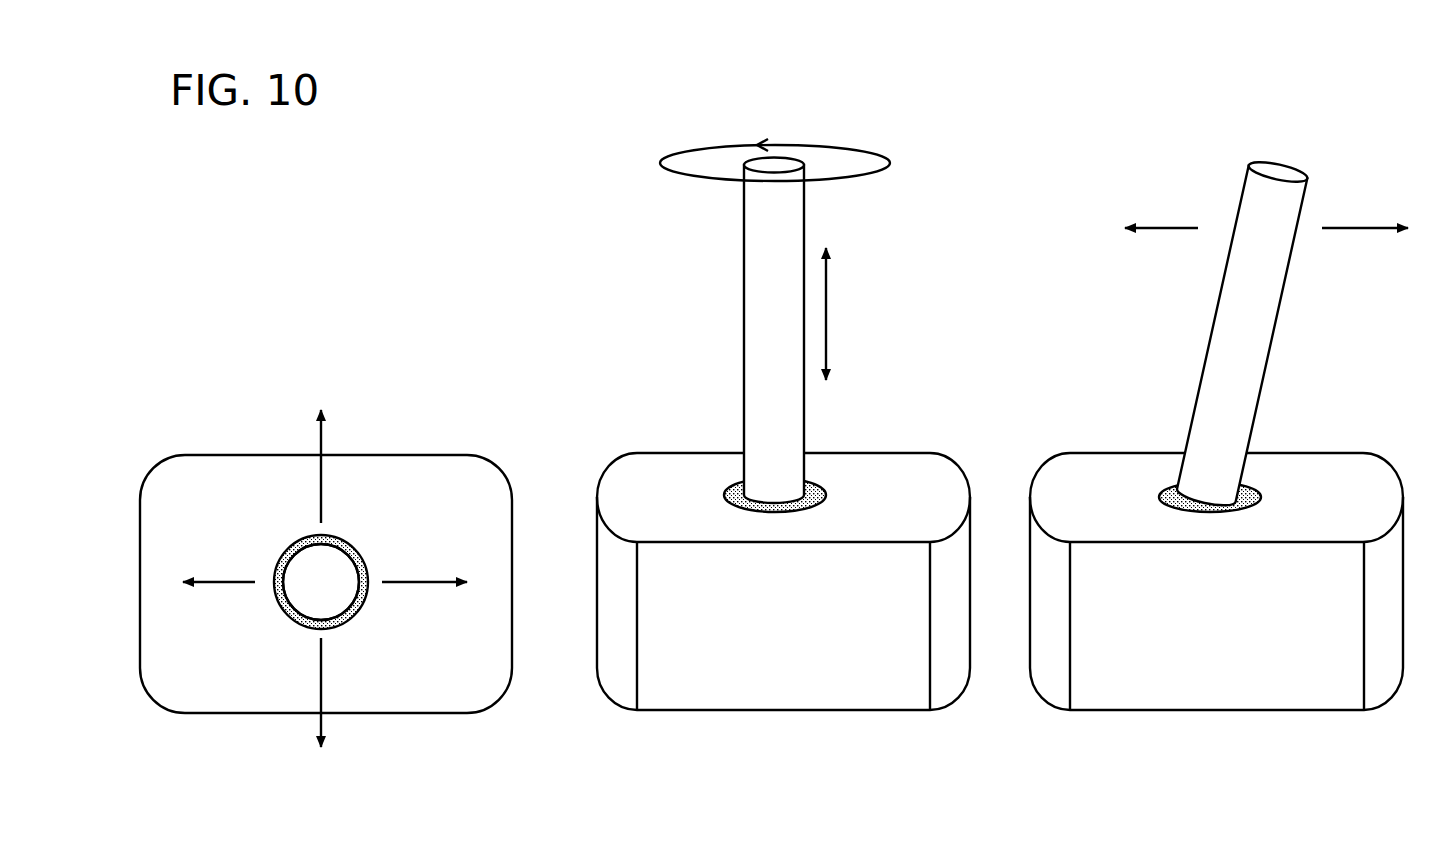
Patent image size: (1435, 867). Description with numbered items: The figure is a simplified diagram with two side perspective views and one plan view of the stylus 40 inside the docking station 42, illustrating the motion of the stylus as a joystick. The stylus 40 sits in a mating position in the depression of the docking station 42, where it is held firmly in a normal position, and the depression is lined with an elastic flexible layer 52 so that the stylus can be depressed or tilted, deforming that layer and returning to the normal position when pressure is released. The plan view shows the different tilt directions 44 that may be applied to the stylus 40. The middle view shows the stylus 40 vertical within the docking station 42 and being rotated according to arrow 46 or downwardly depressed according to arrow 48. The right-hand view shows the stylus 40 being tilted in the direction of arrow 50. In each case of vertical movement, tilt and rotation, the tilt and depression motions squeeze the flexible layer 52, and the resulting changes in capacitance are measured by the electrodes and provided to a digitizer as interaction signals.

The stylus 40 is at (331, 594).
The docking station 42 is at (572, 437).
The tilt directions 44 is at (313, 673).
The rotation arrow 46 is at (655, 175).
The depression arrow 48 is at (848, 307).
The tilt arrow 50 is at (1385, 242).
The flexible layer 52 is at (310, 550).